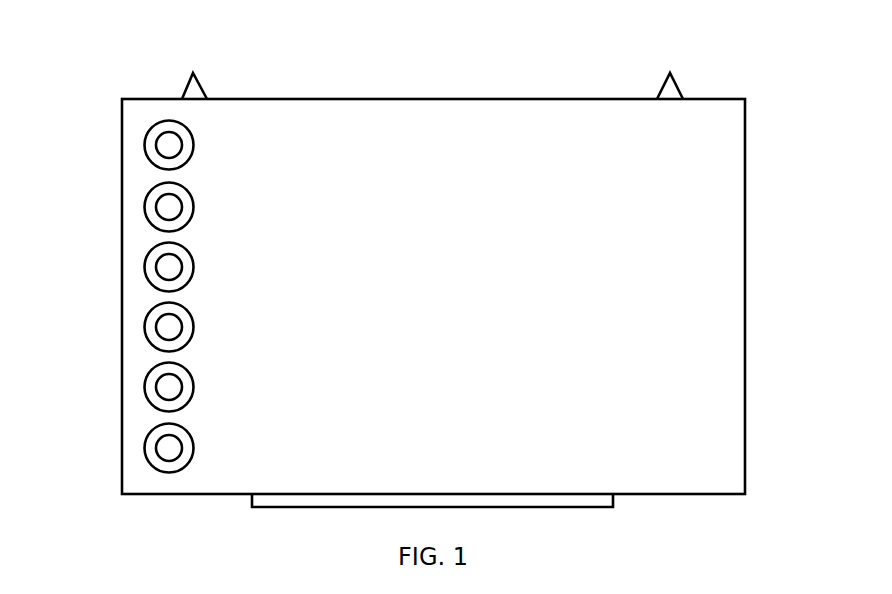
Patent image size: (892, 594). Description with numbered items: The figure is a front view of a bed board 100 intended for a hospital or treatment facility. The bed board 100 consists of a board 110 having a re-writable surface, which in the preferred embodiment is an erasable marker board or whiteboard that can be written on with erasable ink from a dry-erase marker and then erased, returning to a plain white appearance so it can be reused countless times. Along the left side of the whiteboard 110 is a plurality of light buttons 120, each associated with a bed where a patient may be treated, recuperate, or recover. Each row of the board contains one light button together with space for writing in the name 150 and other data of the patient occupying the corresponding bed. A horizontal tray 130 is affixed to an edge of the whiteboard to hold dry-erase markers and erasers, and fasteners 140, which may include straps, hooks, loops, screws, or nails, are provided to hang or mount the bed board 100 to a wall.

The bed board 100 is at (408, 99).
The board 110 is at (608, 287).
The light buttons 120 is at (167, 145).
The horizontal tray 130 is at (600, 507).
The fasteners 140 is at (201, 89).
The name 150 is at (433, 149).